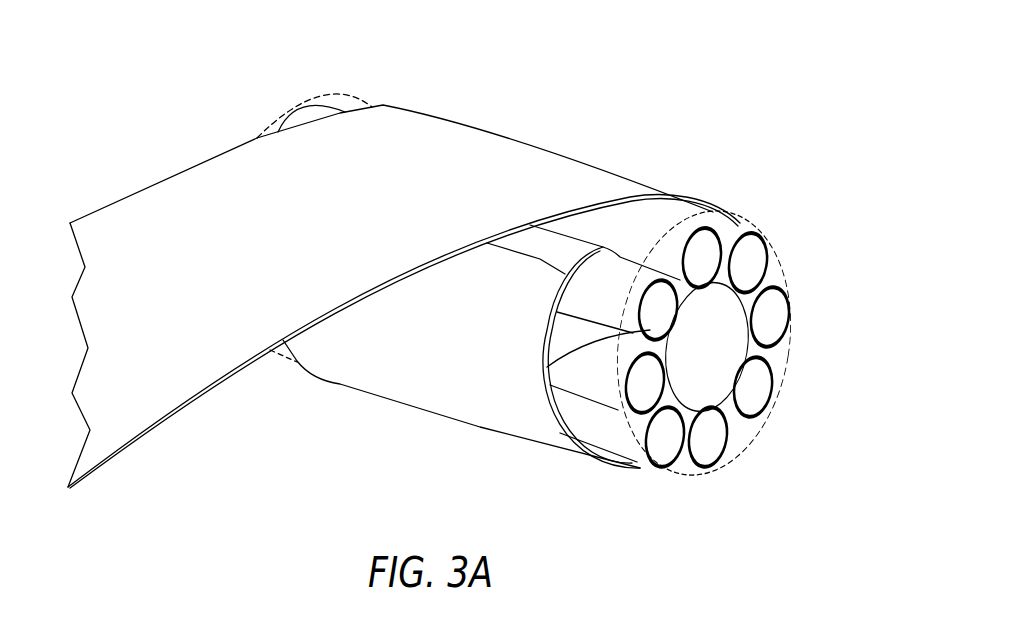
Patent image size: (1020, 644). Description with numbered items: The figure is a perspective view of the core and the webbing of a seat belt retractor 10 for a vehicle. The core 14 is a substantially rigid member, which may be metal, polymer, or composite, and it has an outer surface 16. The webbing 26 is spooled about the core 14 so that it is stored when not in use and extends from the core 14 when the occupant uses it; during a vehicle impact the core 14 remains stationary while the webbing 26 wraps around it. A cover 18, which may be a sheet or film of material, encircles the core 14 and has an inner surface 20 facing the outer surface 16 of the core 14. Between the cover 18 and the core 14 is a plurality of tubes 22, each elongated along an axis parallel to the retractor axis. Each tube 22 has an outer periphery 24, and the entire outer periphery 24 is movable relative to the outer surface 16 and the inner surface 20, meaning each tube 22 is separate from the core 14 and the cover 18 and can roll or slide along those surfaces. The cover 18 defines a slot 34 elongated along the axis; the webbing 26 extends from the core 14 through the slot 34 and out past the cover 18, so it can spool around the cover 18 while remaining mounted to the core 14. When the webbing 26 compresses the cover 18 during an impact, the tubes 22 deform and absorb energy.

The seat belt retractor 10 is at (747, 61).
The core 14 is at (720, 363).
The outer surface 16 is at (548, 365).
The cover 18 is at (323, 95).
The inner surface 20 is at (727, 222).
The tubes 22 is at (660, 300).
The outer periphery 24 is at (745, 268).
The webbing 26 is at (463, 158).
The slot 34 is at (562, 232).